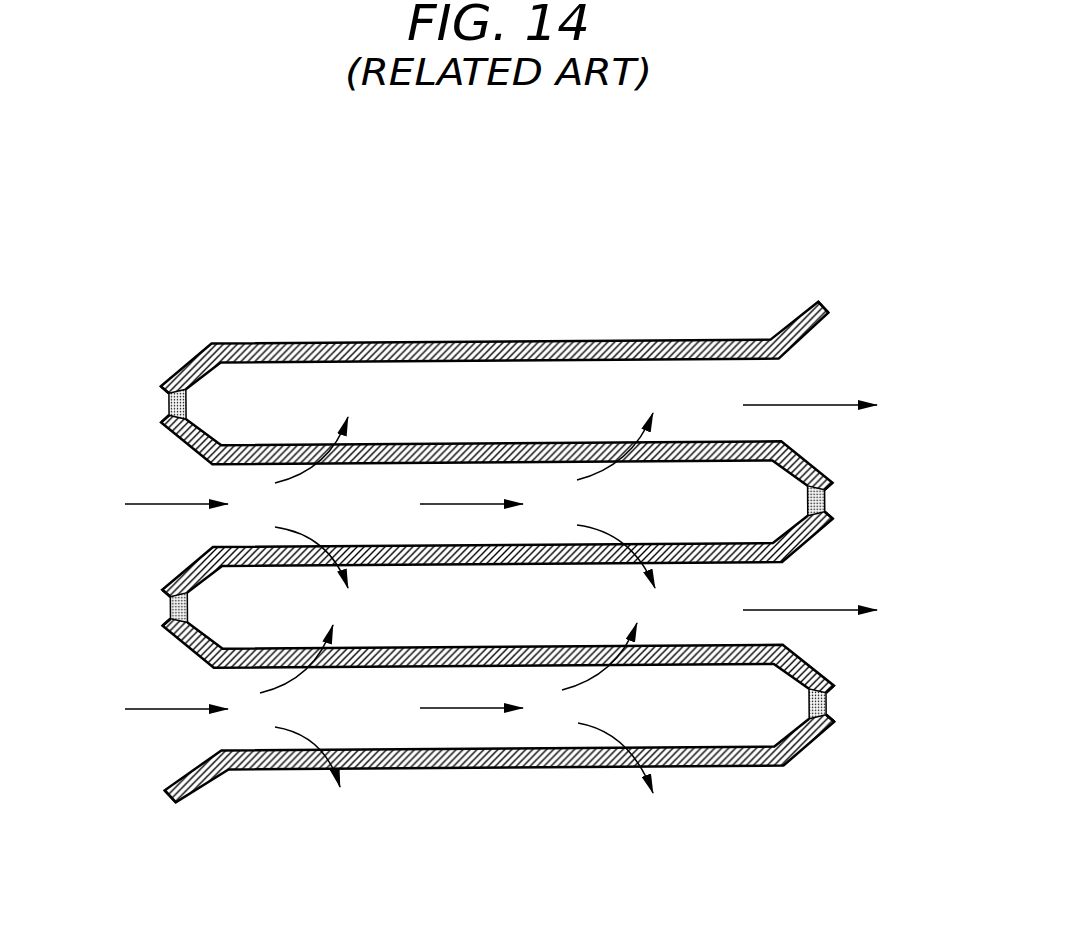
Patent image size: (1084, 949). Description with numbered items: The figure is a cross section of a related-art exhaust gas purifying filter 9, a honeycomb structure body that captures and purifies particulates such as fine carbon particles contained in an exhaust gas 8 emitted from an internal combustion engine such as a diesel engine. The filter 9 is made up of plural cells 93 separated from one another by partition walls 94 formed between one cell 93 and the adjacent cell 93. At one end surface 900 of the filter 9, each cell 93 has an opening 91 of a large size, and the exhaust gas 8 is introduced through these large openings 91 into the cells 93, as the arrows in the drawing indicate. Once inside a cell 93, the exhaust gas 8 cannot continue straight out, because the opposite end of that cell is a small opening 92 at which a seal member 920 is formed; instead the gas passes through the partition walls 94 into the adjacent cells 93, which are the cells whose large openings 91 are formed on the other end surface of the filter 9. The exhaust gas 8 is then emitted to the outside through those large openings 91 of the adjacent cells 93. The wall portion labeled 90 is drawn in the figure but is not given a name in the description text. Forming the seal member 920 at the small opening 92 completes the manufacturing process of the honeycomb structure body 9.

The exhaust gas purifying filter 9 is at (499, 524).
The flat plate portion 90 is at (592, 311).
The opening of a large size 91 is at (162, 425).
The small opening 92 is at (170, 409).
The cell 93 is at (527, 472).
The partition wall 94 is at (303, 450).
The end surface 900 is at (850, 467).
The seal member 920 is at (172, 612).
The exhaust gas 8 is at (163, 507).